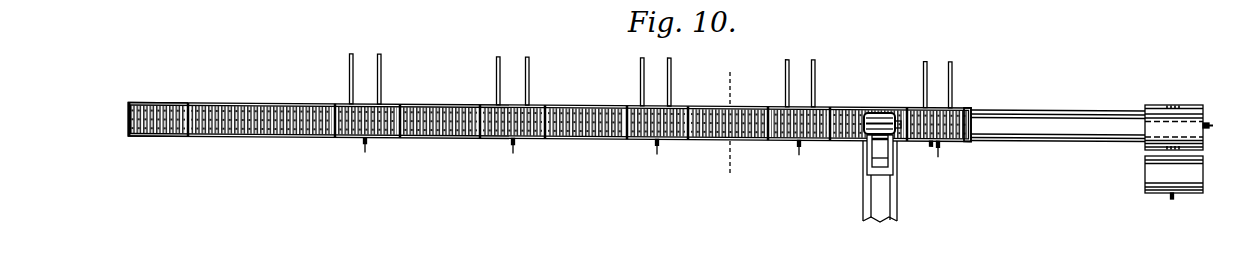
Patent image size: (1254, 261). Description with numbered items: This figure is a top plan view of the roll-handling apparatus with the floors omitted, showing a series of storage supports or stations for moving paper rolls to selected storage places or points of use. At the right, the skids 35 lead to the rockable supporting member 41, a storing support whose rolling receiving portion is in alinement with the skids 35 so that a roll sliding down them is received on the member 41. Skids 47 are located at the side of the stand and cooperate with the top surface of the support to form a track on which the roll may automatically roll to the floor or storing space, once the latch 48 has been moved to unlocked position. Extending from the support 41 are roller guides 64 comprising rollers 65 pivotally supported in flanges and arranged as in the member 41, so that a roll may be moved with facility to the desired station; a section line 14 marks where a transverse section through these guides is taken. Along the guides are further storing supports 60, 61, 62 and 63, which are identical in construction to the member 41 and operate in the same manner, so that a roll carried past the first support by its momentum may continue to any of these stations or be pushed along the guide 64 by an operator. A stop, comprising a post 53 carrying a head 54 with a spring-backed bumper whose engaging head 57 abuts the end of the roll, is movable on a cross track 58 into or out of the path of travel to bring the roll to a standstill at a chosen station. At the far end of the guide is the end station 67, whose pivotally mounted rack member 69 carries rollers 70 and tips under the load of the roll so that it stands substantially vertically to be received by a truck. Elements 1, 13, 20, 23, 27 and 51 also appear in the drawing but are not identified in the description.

The lower block 1 is at (1153, 175).
The pin 13 is at (1171, 196).
The section line 14 is at (732, 124).
The block 20 is at (1147, 110).
The serrations 23 is at (1181, 104).
The pin 27 is at (1212, 125).
The skids 35 is at (1049, 142).
The rockable supporting member 41 is at (969, 141).
The skids 47 is at (379, 64).
The latch 48 is at (368, 144).
The pin 51 is at (940, 153).
The post 53 is at (870, 150).
The head 54 is at (880, 112).
The engaging head 57 is at (912, 110).
The cross track 58 is at (884, 193).
The storing support 60 is at (821, 107).
The storing support 61 is at (677, 109).
The storing support 62 is at (535, 105).
The storing support 63 is at (386, 105).
The roller guides 64 is at (276, 103).
The rollers 65 is at (300, 138).
The end station 67 is at (184, 103).
The rack member 69 is at (156, 140).
The rollers 70 is at (131, 124).